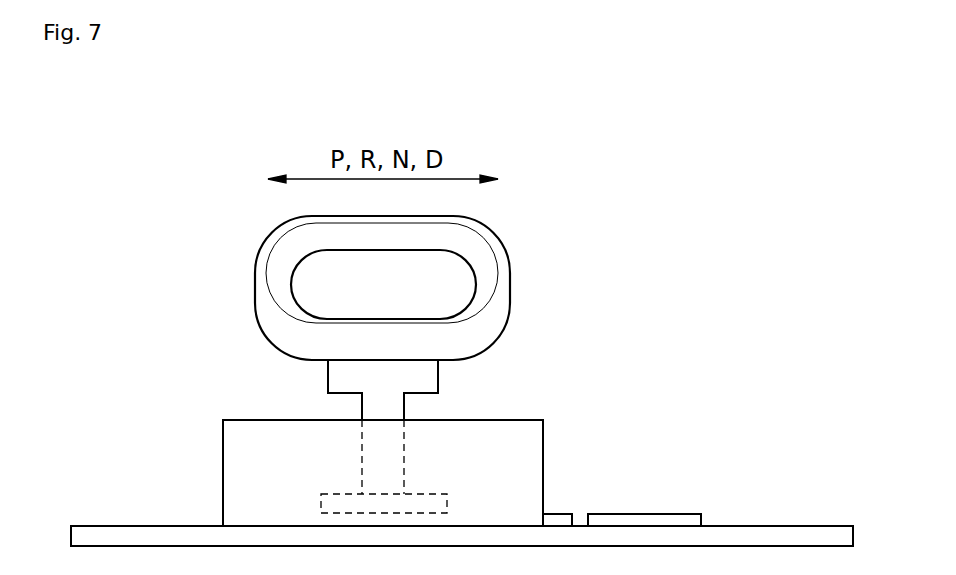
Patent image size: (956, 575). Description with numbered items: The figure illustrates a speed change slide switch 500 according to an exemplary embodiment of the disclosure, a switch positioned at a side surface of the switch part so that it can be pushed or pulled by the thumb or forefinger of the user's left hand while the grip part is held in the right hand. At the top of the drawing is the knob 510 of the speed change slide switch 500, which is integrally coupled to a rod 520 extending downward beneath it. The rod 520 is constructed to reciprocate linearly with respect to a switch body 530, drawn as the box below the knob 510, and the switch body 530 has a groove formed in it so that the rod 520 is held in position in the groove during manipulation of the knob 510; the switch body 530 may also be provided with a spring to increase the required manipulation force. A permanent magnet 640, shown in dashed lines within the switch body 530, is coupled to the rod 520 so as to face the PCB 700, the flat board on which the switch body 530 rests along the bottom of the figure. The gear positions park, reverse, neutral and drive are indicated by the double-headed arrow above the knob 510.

The speed change slide switch 500 is at (257, 251).
The knob 510 is at (443, 275).
The rod 520 is at (395, 410).
The switch body 530 is at (525, 453).
The permanent magnet 640 is at (337, 502).
The PCB 700 is at (802, 533).